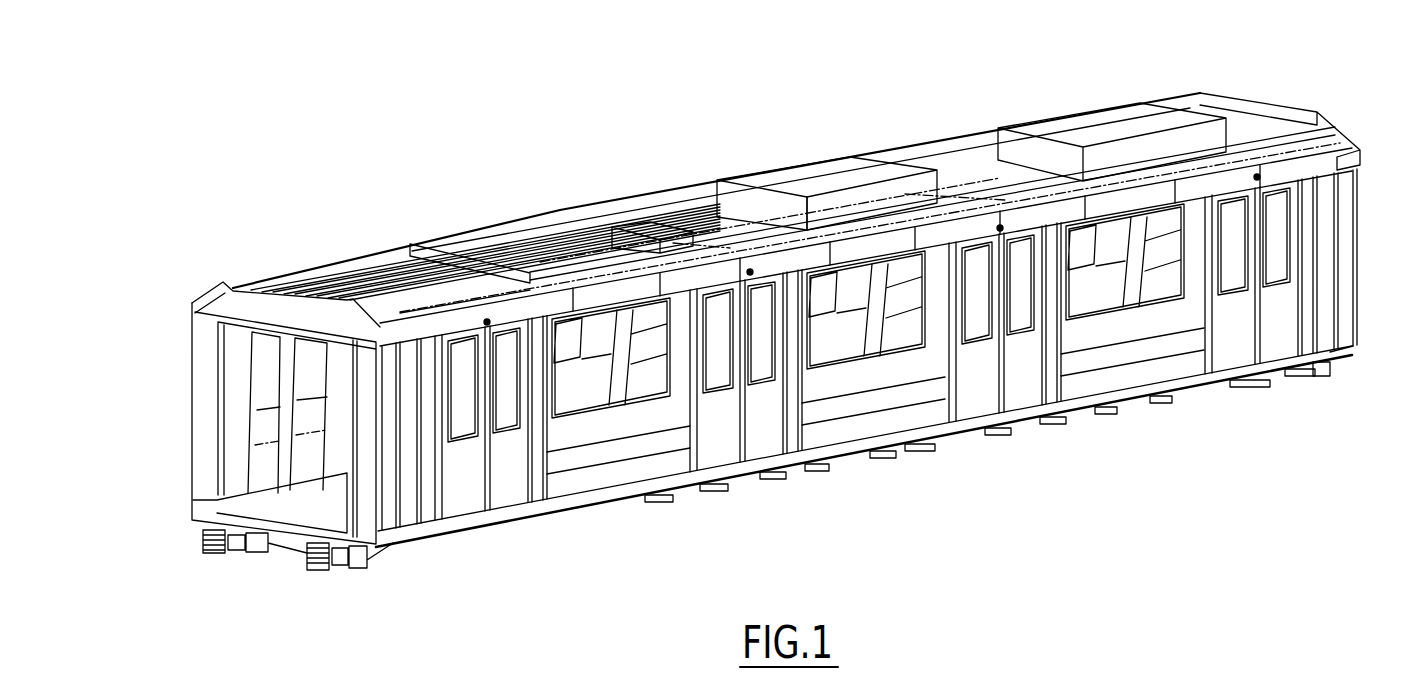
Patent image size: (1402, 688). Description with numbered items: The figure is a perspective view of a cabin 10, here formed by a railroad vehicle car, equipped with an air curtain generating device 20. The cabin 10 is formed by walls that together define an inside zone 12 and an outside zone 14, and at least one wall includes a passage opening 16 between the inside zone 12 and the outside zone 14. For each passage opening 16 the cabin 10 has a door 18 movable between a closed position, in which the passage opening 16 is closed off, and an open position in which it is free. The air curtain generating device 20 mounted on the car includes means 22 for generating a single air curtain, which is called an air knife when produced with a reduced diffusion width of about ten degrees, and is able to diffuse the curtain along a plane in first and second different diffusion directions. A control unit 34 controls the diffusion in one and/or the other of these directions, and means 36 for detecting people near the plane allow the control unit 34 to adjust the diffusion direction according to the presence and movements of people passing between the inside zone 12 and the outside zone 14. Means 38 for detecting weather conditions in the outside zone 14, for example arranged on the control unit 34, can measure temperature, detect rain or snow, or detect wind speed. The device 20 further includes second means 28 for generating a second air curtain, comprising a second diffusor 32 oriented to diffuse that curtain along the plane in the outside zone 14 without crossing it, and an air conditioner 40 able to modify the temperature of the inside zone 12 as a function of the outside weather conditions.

The cabin 10 is at (733, 331).
The inside zone 12 is at (190, 398).
The outside zone 14 is at (156, 569).
The passage opening 16 is at (490, 540).
The door 18 is at (523, 470).
The air curtain generating device 20 is at (827, 144).
The means for generating a single air curtain 22 is at (847, 165).
The second means for generating a second air curtain 28 is at (757, 178).
The second diffusor 32 is at (1063, 313).
The control unit 34 is at (633, 200).
The means for detecting people 36 is at (487, 322).
The means for detecting weather conditions 38 is at (674, 184).
The air conditioner 40 is at (1095, 128).